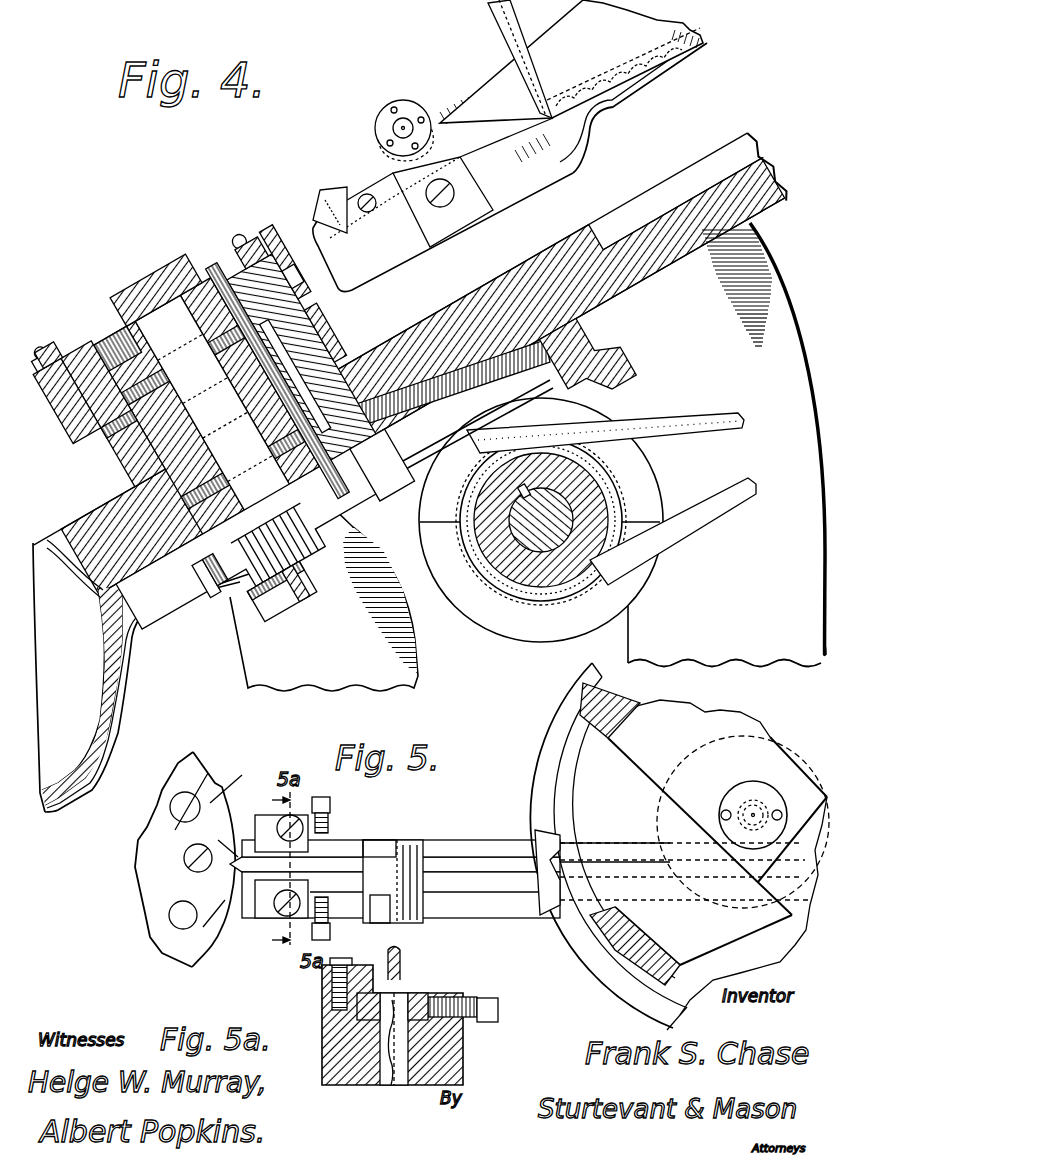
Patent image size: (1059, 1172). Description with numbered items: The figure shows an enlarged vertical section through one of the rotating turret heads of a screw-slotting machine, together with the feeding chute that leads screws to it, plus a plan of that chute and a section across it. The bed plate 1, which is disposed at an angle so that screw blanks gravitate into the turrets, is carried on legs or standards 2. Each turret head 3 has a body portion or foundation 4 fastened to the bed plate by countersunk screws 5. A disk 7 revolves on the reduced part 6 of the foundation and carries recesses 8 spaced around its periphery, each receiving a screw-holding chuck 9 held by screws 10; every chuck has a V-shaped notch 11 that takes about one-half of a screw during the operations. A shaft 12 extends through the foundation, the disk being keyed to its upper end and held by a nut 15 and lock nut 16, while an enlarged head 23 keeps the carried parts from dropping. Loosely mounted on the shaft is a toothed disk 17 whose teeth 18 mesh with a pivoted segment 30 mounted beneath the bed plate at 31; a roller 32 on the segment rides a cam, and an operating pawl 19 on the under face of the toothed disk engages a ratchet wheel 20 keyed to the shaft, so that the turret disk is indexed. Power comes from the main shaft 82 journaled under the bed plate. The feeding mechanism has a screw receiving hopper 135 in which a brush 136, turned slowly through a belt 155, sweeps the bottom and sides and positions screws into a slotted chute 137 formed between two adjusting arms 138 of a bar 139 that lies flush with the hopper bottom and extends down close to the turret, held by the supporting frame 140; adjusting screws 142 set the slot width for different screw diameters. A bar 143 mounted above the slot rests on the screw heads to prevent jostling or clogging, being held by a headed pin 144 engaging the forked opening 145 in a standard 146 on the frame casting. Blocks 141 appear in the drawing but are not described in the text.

In FIG. 4, the bed plate 1 is at (655, 287).
In FIG. 4, the legs or standards 2 is at (622, 445).
In FIG. 4, the turret head 3 is at (126, 454).
In FIG. 4, the body portion or foundation 4 is at (352, 346).
In FIG. 4, the countersunk screws 5 is at (122, 484).
In FIG. 4, the reduced part of the foundation 6 is at (110, 440).
In FIG. 4, the disk 7 is at (205, 268).
In FIG. 5, the disk 7 is at (185, 859).
In FIG. 4, the recesses 8 is at (308, 294).
In FIG. 5, the recesses 8 is at (198, 788).
In FIG. 4, the screw-holding chucks 9 is at (266, 256).
In FIG. 5, the screw-holding chucks 9 is at (208, 847).
In FIG. 4, the screws 10 is at (252, 258).
In FIG. 5, the screws 10 is at (186, 854).
In FIG. 5, the pockets or V-shaped notches 11 is at (225, 937).
In FIG. 4, the shaft 12 is at (227, 429).
In FIG. 4, the nut 15 is at (120, 320).
In FIG. 4, the lock nut 16 is at (135, 300).
In FIG. 4, the toothed disk 17 is at (194, 448).
In FIG. 4, the teeth 18 is at (455, 524).
In FIG. 4, the operating pawl 19 is at (215, 598).
In FIG. 4, the ratchet wheel 20 is at (292, 578).
In FIG. 4, the enlarged head of the shaft 23 is at (272, 594).
In FIG. 4, the pivoted segment 30 is at (377, 470).
In FIG. 4, the pivot of the segment 31 is at (627, 352).
In FIG. 4, the roller 32 is at (503, 437).
In FIG. 4, the main shaft 82 is at (606, 492).
In FIG. 4, the screw receiving hopper 135 is at (571, 61).
In FIG. 5, the screw receiving hopper 135 is at (545, 757).
In FIG. 5, the brush 136 is at (700, 735).
In FIG. 5, the slotted chute 137 is at (585, 856).
In FIG. 5, the adjusting arms 138 is at (452, 852).
In FIG. 5A, the adjusting arms 138 is at (392, 1003).
In FIG. 5, the bar 139 is at (497, 896).
In FIG. 5A, the bar 139 is at (390, 1085).
In FIG. 4, the supporting frame 140 is at (612, 94).
In FIG. 5, the supporting frame 140 is at (553, 918).
In FIG. 4, the block 141 is at (318, 198).
In FIG. 5, the block 141 is at (308, 830).
In FIG. 4, the adjusting screws 142 is at (369, 213).
In FIG. 5, the adjusting screws 142 is at (322, 802).
In FIG. 4, the bar 143 is at (364, 166).
In FIG. 4, the headed pin 144 is at (408, 98).
In FIG. 5, the headed pin 144 is at (405, 920).
In FIG. 4, the forked opening 145 is at (386, 108).
In FIG. 4, the standard 146 is at (432, 110).
In FIG. 4, the belt 155 is at (672, 533).